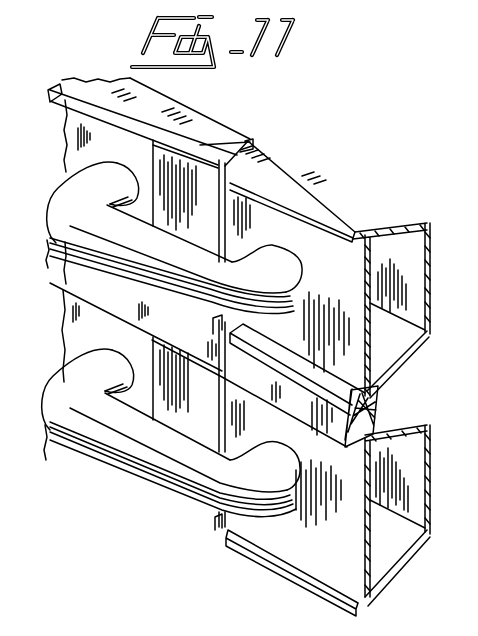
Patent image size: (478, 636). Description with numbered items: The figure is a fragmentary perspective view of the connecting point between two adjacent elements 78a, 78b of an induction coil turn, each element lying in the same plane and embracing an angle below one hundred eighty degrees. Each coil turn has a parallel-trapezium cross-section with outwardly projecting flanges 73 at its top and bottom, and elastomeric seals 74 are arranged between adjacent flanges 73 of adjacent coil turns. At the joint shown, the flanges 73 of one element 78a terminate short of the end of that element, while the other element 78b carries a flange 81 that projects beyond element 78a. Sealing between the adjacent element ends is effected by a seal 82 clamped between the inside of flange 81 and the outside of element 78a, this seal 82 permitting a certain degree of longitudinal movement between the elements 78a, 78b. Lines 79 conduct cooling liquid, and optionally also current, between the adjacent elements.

The flange 73 is at (53, 88).
The seal 74 is at (380, 399).
The element 78a is at (388, 216).
The element 78b is at (72, 140).
The line 79 is at (57, 207).
The flange 81 is at (245, 186).
The seal 82 is at (250, 143).